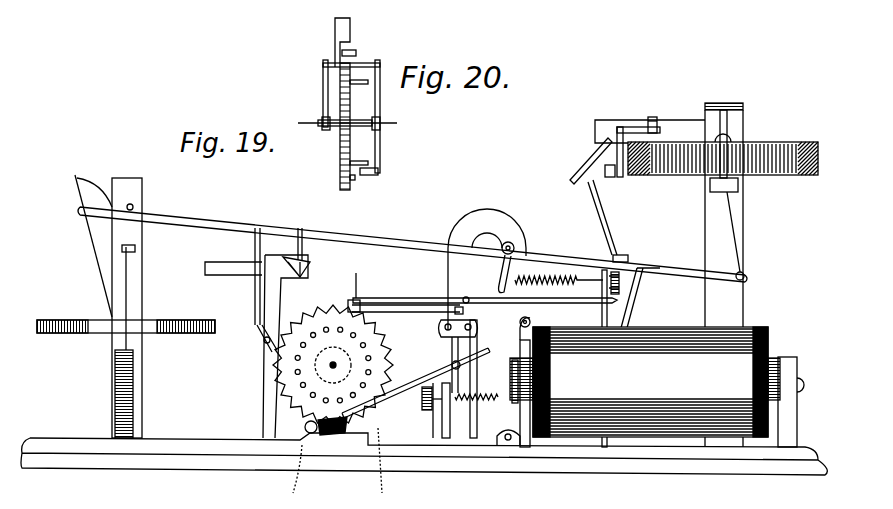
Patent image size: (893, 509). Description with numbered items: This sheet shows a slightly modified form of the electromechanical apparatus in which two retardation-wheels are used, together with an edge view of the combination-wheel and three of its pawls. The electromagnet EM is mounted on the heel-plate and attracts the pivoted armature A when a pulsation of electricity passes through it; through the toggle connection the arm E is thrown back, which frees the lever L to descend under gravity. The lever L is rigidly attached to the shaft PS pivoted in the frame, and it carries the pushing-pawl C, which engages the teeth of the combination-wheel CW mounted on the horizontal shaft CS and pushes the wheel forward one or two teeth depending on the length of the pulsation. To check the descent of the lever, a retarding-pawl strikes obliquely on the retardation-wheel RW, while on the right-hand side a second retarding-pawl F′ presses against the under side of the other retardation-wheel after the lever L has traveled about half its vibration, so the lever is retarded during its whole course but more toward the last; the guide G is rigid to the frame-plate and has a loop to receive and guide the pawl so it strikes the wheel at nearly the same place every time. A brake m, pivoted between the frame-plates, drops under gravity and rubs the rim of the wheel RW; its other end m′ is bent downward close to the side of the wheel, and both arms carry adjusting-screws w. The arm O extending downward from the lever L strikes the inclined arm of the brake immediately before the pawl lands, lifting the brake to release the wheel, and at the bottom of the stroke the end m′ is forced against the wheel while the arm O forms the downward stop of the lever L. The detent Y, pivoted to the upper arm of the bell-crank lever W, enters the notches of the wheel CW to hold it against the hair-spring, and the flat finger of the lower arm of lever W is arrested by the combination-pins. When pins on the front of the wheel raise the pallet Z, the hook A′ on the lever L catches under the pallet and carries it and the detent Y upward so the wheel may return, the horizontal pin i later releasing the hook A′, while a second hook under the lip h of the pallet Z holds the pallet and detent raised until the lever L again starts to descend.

In FIG. 20, the detent Y is at (350, 24).
In FIG. 19, the detent Y is at (407, 318).
In FIG. 20, the pallet Z is at (353, 51).
In FIG. 19, the pallet Z is at (482, 292).
In FIG. 20, the shaft CS is at (358, 124).
In FIG. 20, the bell-crank lever W is at (380, 147).
In FIG. 19, the bell-crank lever W is at (420, 383).
In FIG. 20, the combination-wheel CW is at (340, 165).
In FIG. 19, the combination-wheel CW is at (333, 365).
In FIG. 19, the retarding-pawl F′ is at (96, 247).
In FIG. 19, the retardation-wheel RW is at (427, 237).
In FIG. 19, the lever L is at (412, 244).
In FIG. 19, the pushing-pawl C is at (255, 305).
In FIG. 19, the horizontal pin i is at (296, 252).
In FIG. 19, the hook A′ is at (303, 254).
In FIG. 19, the shaft PS is at (498, 269).
In FIG. 19, the arm E is at (502, 270).
In FIG. 19, the arm of pallet h is at (572, 358).
In FIG. 19, the armature A is at (490, 341).
In FIG. 19, the electromagnet EM is at (657, 382).
In FIG. 19, the arm O is at (608, 221).
In FIG. 19, the brake m is at (632, 127).
In FIG. 19, the brake end m′ is at (620, 178).
In FIG. 19, the adjusting-screws w is at (602, 171).
In FIG. 19, the guide G is at (738, 188).